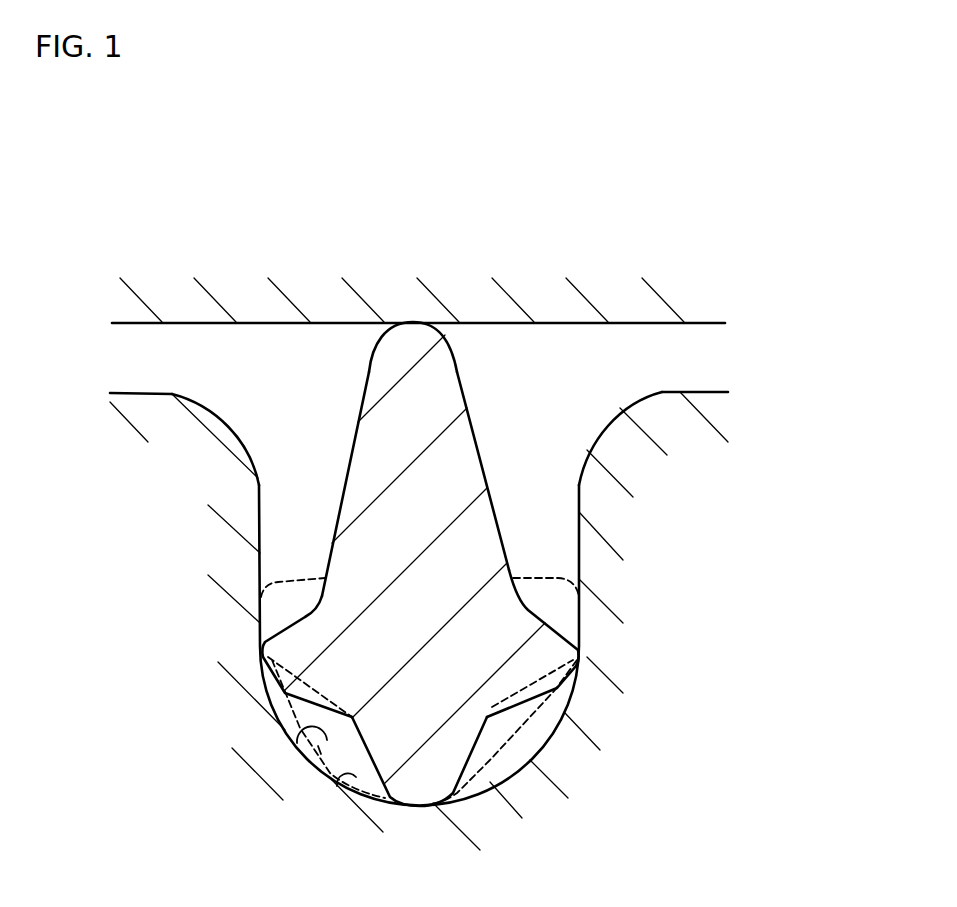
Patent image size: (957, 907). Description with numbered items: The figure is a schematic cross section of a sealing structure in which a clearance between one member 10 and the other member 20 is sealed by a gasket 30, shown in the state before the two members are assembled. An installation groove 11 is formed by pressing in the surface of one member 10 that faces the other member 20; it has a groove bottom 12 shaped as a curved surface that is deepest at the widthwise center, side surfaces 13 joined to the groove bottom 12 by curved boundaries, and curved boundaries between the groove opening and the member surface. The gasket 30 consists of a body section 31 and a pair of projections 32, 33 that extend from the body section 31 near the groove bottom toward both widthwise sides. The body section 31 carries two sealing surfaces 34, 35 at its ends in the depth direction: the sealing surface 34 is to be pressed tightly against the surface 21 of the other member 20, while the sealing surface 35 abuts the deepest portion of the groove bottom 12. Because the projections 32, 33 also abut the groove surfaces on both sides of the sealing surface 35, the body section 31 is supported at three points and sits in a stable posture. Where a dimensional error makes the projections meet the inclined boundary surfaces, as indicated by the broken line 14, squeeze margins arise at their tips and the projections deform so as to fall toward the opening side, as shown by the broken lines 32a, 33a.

The one member 10 is at (127, 377).
The installation groove 11 is at (292, 453).
The groove bottom 12 is at (335, 782).
The side surfaces 13 is at (261, 510).
The broken line 14 is at (293, 734).
The other member 20 is at (724, 349).
The surface 21 is at (600, 320).
The gasket 30 is at (503, 378).
The body section 31 is at (482, 510).
The projection 32 is at (270, 659).
The broken line 32a is at (287, 582).
The projection 33 is at (557, 650).
The broken line 33a is at (548, 578).
The sealing surface 34 is at (412, 322).
The sealing surface 35 is at (423, 805).